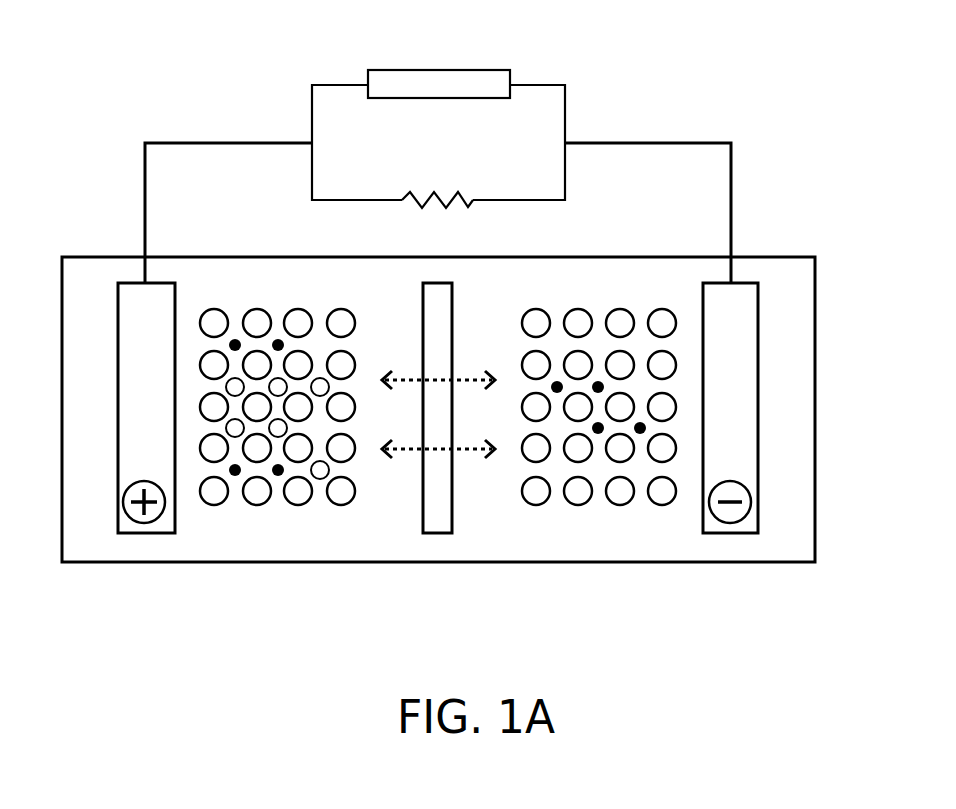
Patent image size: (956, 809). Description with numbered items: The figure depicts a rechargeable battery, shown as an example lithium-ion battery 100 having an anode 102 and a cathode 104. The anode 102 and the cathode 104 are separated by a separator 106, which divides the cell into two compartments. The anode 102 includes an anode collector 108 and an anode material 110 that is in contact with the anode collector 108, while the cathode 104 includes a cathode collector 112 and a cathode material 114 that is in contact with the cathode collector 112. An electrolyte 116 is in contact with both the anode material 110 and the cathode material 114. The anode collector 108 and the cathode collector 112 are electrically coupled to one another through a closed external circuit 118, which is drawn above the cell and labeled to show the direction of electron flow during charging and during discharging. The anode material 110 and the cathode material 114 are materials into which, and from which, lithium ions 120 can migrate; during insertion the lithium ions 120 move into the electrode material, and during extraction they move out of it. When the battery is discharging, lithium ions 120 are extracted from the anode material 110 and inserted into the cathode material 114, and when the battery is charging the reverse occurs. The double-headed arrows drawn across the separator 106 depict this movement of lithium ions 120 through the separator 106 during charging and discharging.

The lithium-ion battery 100 is at (224, 68).
The anode 102 is at (606, 552).
The cathode 104 is at (254, 552).
The separator 106 is at (436, 533).
The anode collector 108 is at (742, 282).
The anode material 110 is at (577, 288).
The cathode collector 112 is at (139, 283).
The cathode material 114 is at (311, 283).
The electrolyte 116 is at (522, 296).
The closed external circuit 118 is at (722, 140).
The lithium ions 120 is at (557, 393).